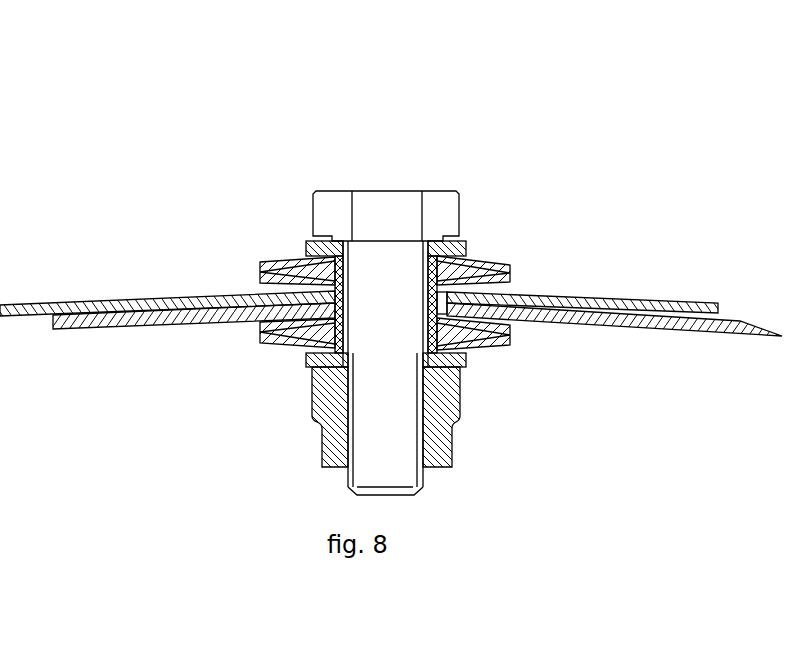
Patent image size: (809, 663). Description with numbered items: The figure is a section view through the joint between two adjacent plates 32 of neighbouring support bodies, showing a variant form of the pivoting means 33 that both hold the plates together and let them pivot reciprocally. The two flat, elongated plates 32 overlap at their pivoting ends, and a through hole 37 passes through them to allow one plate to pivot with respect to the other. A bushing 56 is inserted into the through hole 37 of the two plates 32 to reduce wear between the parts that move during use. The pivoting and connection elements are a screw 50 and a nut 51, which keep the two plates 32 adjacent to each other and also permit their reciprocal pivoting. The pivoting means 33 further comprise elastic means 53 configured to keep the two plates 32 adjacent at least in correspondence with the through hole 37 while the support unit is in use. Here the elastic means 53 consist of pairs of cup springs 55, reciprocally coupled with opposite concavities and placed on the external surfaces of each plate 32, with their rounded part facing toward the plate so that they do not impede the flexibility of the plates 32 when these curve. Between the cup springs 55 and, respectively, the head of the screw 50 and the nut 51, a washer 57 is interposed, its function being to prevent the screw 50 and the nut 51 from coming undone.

The pivoting means 33 is at (532, 124).
The screw 50 is at (393, 212).
The washer 57 is at (433, 249).
The bushing 56 is at (340, 298).
The through hole 37 is at (447, 297).
The elastic means 53 is at (268, 248).
The cup springs 55 is at (505, 280).
The plate 32 is at (33, 308).
The nut 51 is at (440, 440).